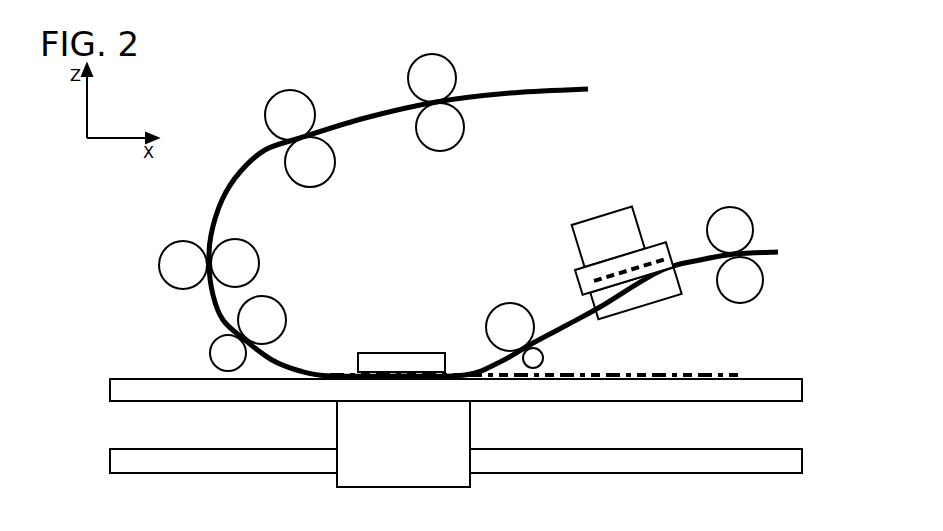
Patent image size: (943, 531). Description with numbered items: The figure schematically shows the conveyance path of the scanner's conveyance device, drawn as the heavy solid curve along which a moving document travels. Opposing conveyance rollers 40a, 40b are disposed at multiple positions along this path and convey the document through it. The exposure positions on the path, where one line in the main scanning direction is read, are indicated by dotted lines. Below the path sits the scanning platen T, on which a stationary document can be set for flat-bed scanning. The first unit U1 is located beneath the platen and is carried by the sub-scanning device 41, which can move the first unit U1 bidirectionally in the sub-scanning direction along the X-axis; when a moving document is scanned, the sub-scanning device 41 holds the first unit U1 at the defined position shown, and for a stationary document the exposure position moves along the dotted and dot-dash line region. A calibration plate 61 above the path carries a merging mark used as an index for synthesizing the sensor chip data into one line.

The conveyance roller 40a is at (466, 240).
The conveyance roller 40b is at (514, 227).
The sub-scanning device 41 is at (458, 478).
The calibration plate 61 is at (401, 346).
The scanning platen T is at (446, 407).
The first unit U1 is at (368, 459).